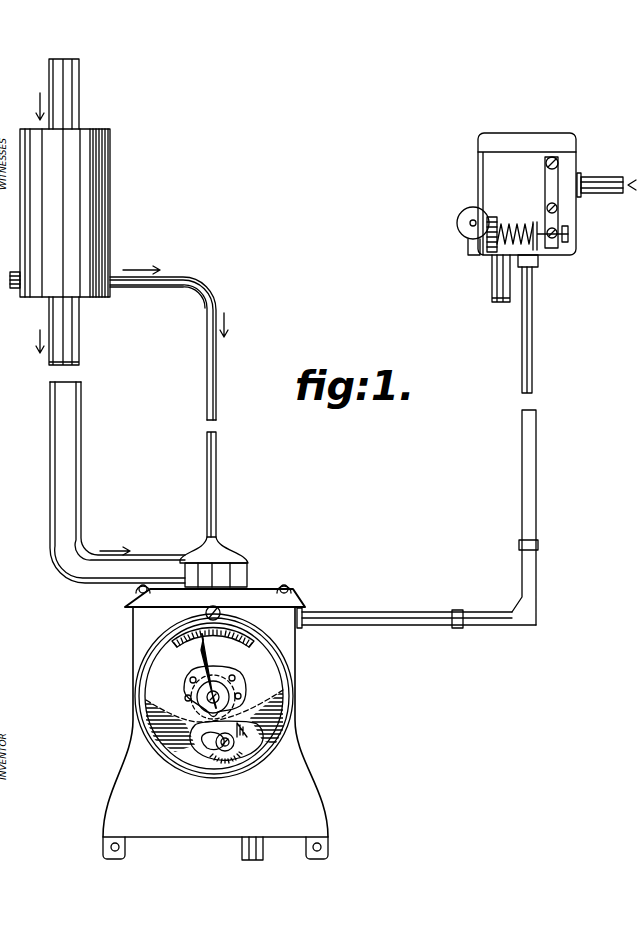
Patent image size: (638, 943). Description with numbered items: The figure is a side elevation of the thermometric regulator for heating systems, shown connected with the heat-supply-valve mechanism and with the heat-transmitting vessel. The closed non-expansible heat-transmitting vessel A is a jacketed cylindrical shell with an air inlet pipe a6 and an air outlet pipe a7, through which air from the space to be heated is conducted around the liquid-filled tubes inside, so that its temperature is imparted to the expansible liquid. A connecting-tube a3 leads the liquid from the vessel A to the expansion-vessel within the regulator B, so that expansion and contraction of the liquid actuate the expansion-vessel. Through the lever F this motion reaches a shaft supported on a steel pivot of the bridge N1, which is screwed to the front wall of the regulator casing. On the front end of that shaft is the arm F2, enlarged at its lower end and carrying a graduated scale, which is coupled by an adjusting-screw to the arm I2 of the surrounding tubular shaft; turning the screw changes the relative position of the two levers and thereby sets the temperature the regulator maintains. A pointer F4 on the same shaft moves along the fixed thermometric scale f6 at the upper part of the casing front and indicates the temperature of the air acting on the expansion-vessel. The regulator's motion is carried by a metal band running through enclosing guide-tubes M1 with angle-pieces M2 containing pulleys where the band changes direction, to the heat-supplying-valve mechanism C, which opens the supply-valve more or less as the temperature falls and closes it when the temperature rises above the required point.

The air inlet pipe a6 is at (72, 94).
The heat-transmitting vessel A is at (72, 213).
The air outlet pipe a7 is at (110, 440).
The connecting-tube a3 is at (179, 432).
The regulator B is at (223, 812).
The heat-supplying-valve mechanism C is at (546, 217).
The guide-tube M1 is at (540, 446).
The angle-piece M2 is at (547, 620).
The thermometric scale f6 is at (213, 643).
The pointer F4 is at (194, 671).
The bridge N1 is at (224, 692).
The lever F is at (215, 740).
The arm F2 is at (256, 719).
The arm I2 is at (240, 750).